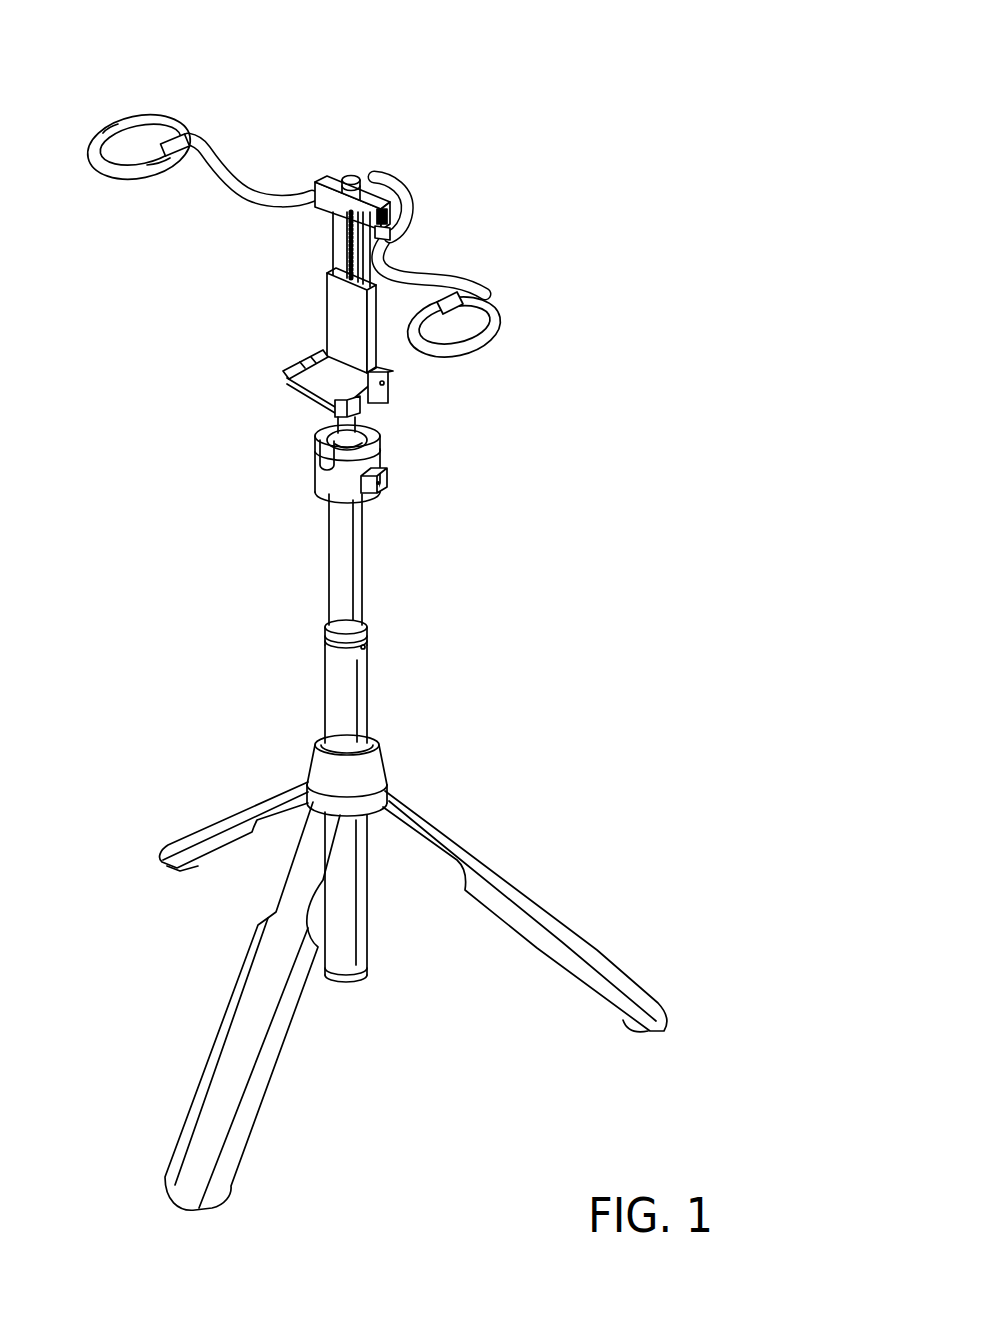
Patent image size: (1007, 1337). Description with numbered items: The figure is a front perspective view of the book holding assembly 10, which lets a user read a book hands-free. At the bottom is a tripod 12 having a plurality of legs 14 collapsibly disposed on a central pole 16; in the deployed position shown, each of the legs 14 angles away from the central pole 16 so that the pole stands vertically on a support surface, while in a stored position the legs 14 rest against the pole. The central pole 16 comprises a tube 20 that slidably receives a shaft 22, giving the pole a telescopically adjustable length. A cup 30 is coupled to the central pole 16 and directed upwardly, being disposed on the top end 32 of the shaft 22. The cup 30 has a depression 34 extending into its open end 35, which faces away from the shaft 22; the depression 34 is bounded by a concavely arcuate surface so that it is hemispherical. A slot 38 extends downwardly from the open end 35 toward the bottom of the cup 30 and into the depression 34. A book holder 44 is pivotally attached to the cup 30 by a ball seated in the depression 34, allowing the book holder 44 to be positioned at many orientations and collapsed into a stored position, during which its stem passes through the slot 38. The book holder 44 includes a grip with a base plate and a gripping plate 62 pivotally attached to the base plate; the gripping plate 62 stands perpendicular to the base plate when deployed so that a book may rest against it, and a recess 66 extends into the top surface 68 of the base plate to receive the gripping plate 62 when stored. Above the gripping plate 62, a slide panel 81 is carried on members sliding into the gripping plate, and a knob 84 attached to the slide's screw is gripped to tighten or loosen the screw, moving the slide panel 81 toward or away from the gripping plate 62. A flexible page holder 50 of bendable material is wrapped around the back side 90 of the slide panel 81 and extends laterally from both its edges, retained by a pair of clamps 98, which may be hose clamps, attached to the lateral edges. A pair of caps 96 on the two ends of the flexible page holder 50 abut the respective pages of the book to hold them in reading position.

The book holding assembly 10 is at (540, 93).
The tripod 12 is at (401, 756).
The legs 14 is at (208, 824).
The central pole 16 is at (305, 672).
The tube 20 is at (365, 690).
The shaft 22 is at (362, 548).
The cup 30 is at (318, 462).
The top end 32 is at (378, 470).
The depression 34 is at (330, 428).
The open end 35 is at (365, 436).
The slot 38 is at (283, 620).
The book holder 44 is at (311, 297).
The flexible page holder 50 is at (408, 210).
The gripping plate 62 is at (333, 313).
The recess 66 is at (339, 375).
The top surface 68 is at (308, 361).
The slide panel 81 is at (322, 179).
The knob 84 is at (358, 174).
The back side 90 is at (380, 207).
The caps 96 is at (190, 139).
The clamps 98 is at (313, 191).